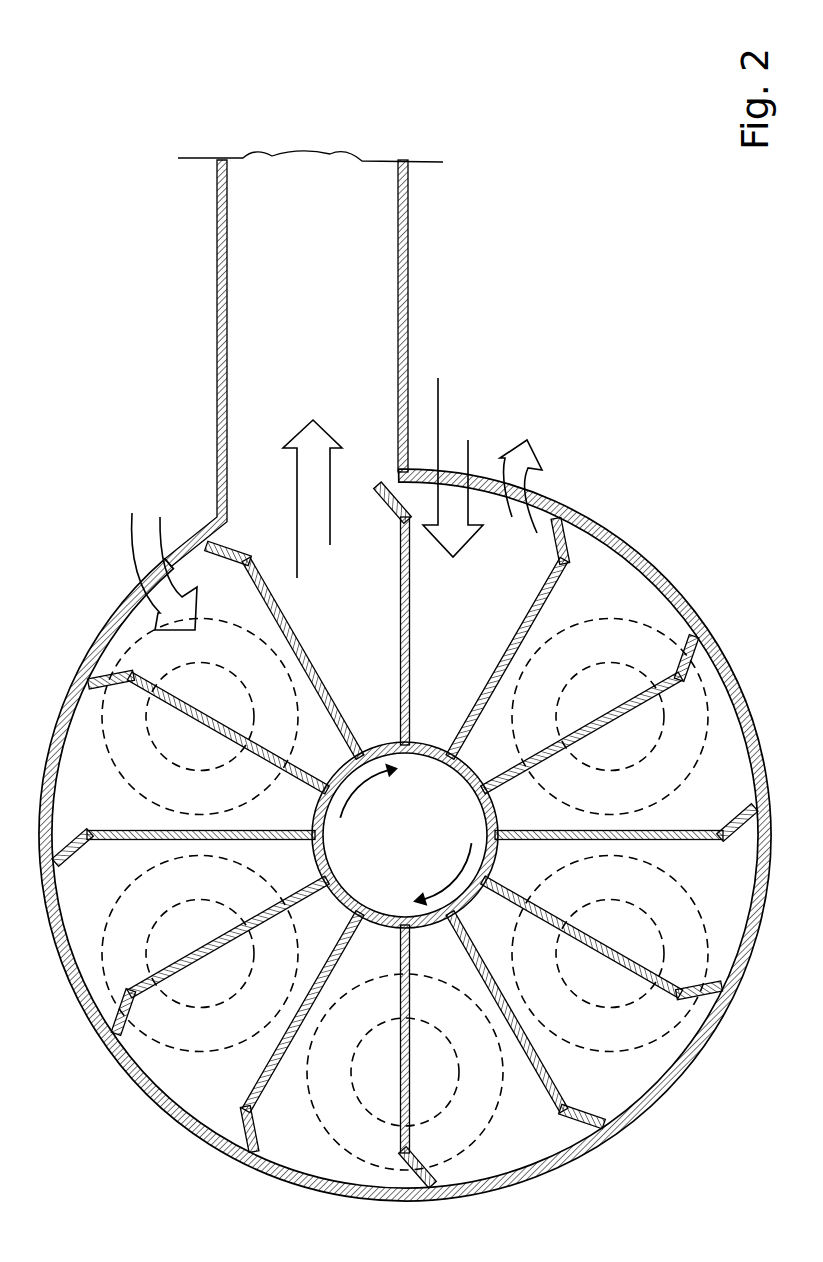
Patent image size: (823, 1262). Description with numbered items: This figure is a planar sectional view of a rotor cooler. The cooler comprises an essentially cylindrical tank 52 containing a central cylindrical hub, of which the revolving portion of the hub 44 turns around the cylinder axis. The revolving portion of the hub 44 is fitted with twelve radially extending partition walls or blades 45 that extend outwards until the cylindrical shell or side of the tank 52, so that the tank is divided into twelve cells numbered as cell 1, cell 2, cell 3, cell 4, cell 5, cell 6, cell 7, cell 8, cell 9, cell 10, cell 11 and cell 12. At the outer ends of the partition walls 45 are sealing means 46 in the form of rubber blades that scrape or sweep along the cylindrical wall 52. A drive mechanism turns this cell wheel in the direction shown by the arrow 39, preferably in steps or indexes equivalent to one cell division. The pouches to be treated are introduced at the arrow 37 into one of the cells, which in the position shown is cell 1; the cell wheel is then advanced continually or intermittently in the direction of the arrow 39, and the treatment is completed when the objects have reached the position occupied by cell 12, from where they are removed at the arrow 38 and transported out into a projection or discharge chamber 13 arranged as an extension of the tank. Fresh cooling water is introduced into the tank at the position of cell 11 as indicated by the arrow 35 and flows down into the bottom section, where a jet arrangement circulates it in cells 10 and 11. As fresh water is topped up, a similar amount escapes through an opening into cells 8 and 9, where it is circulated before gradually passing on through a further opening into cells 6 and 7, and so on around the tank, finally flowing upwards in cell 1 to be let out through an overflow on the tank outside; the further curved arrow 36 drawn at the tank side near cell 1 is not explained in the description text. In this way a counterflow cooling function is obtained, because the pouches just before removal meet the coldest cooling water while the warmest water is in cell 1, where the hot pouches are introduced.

The cell No. 1 is at (434, 727).
The cell 2 is at (484, 756).
The cell 3 is at (513, 806).
The cell 4 is at (513, 864).
The cell 5 is at (484, 914).
The cell 6 is at (434, 943).
The cell 7 is at (376, 943).
The cell 8 is at (326, 914).
The cell 9 is at (297, 864).
The cell 10 is at (297, 805).
The cell 11 is at (326, 755).
The cell 12 is at (376, 726).
The discharge chamber 13 is at (329, 338).
The arrow 35 is at (145, 542).
The material outflow arrow 36 is at (514, 521).
The arrow 37 is at (453, 452).
The arrow 38 is at (313, 543).
The arrow 39 is at (452, 890).
The revolving portion of the hub 44 is at (388, 877).
The partition walls 45 is at (497, 990).
The sealing means 46 is at (608, 507).
The cylindrical tank 52 is at (112, 618).